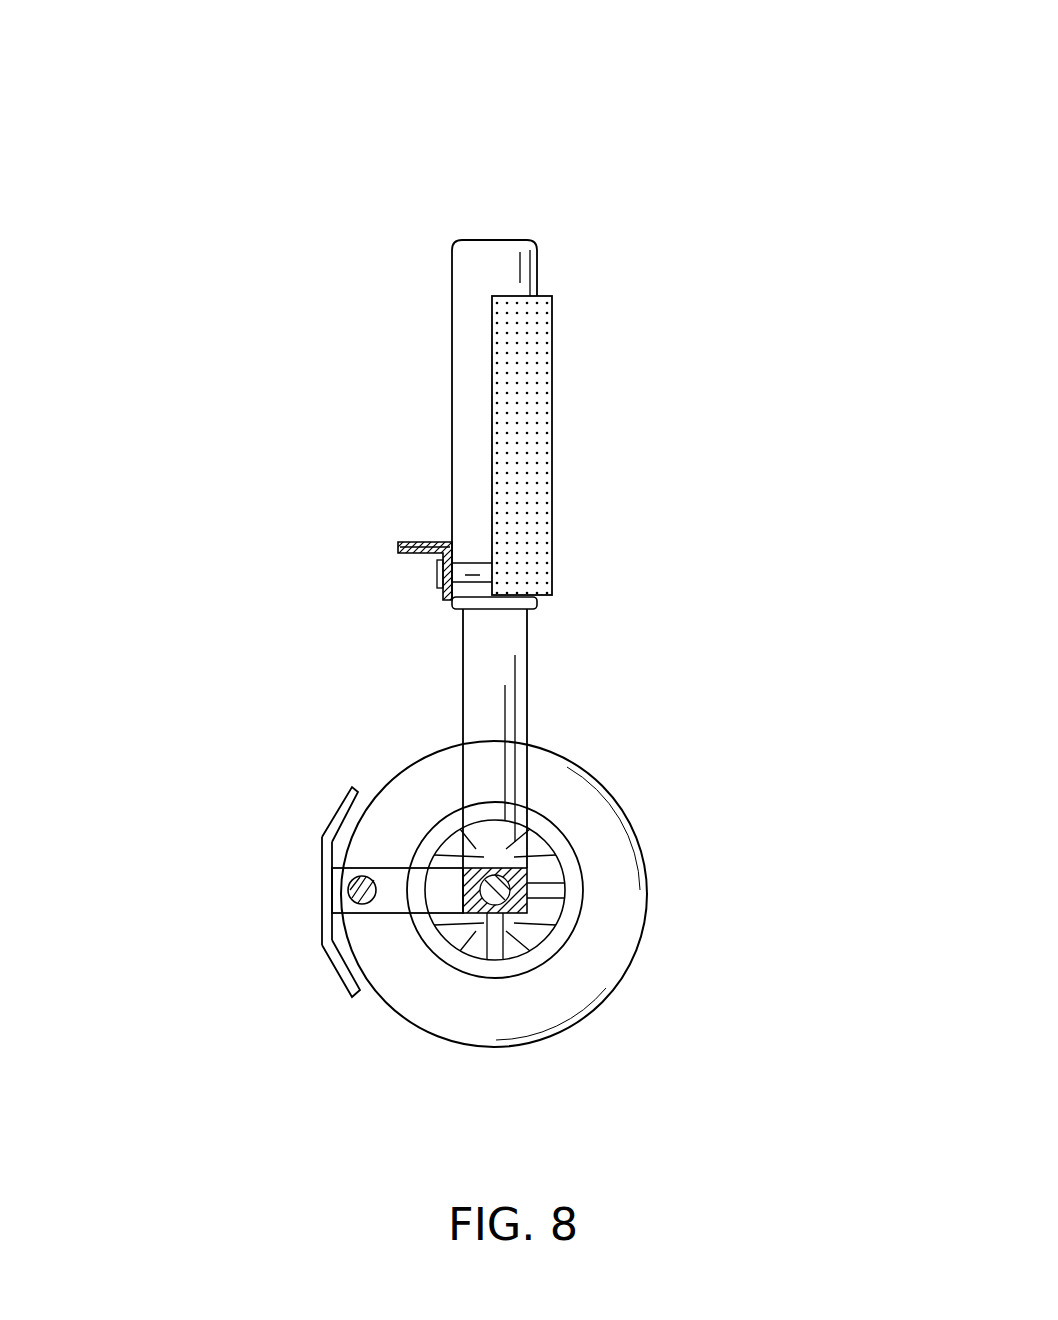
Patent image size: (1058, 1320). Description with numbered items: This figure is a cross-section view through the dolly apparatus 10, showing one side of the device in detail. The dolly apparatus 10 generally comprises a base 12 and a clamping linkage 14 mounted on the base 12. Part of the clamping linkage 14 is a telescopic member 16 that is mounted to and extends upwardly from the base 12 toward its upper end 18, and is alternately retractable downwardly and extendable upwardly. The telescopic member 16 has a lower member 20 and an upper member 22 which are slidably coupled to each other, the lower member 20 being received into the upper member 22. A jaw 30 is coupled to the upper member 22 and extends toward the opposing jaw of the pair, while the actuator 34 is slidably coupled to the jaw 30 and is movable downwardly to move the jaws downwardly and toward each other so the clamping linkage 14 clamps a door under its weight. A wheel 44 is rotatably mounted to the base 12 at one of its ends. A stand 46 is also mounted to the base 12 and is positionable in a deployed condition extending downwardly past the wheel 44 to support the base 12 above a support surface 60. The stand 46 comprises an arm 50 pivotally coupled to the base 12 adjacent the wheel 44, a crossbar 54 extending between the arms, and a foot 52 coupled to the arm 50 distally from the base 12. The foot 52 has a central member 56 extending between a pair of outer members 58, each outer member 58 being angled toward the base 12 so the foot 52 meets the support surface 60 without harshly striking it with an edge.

The dolly apparatus 10 is at (570, 108).
The base 12 is at (530, 876).
The clamping linkage 14 is at (562, 208).
The telescopic member 16 is at (398, 291).
The upper end 18 is at (493, 238).
The lower member 20 is at (527, 700).
The upper member 22 is at (470, 395).
The jaw 30 is at (553, 370).
The actuator 34 is at (415, 555).
The wheel 44 is at (613, 927).
The stand 46 is at (386, 950).
The arm 50 is at (420, 887).
The foot 52 is at (283, 978).
The crossbar 54 is at (365, 878).
The central member 56 is at (322, 882).
The outer member 58 is at (340, 812).
The support surface 60 is at (523, 462).